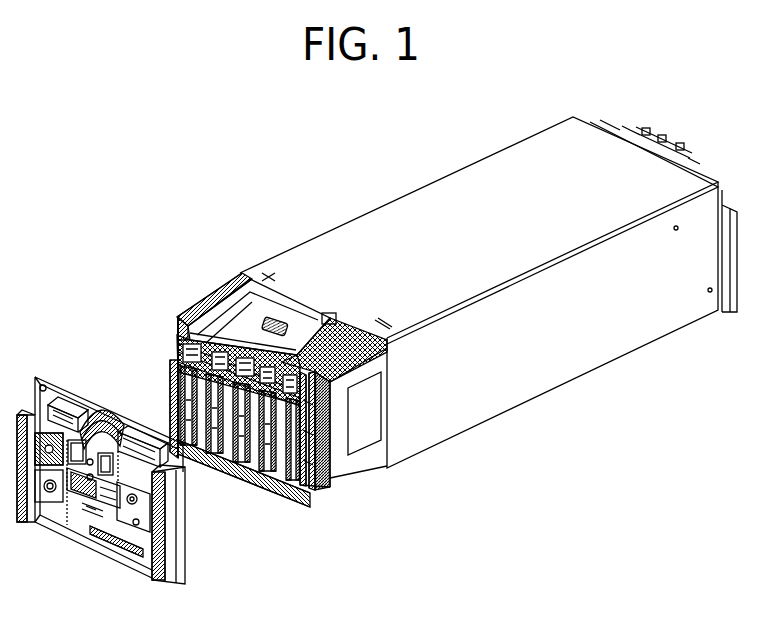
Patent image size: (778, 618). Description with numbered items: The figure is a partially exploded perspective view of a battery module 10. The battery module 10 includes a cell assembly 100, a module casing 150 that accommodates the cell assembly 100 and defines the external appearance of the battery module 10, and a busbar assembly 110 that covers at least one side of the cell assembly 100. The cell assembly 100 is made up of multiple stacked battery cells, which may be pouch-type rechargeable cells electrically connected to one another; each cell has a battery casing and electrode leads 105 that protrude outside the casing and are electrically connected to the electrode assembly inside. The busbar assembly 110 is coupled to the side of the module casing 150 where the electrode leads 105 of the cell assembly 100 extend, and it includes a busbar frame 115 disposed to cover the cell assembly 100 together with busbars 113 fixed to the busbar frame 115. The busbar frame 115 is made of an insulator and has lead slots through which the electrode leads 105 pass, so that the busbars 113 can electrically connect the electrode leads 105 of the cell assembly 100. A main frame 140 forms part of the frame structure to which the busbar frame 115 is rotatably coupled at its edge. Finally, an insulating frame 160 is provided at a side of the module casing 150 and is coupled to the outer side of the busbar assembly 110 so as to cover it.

The battery module 10 is at (364, 204).
The cell assembly 100 is at (361, 428).
The electrode leads 105 is at (328, 487).
The busbar assembly 110 is at (166, 357).
The busbars 113 is at (281, 472).
The busbar frame 115 is at (332, 452).
The main frame 140 is at (213, 298).
The module casing 150 is at (545, 378).
The insulating frame 160 is at (177, 528).